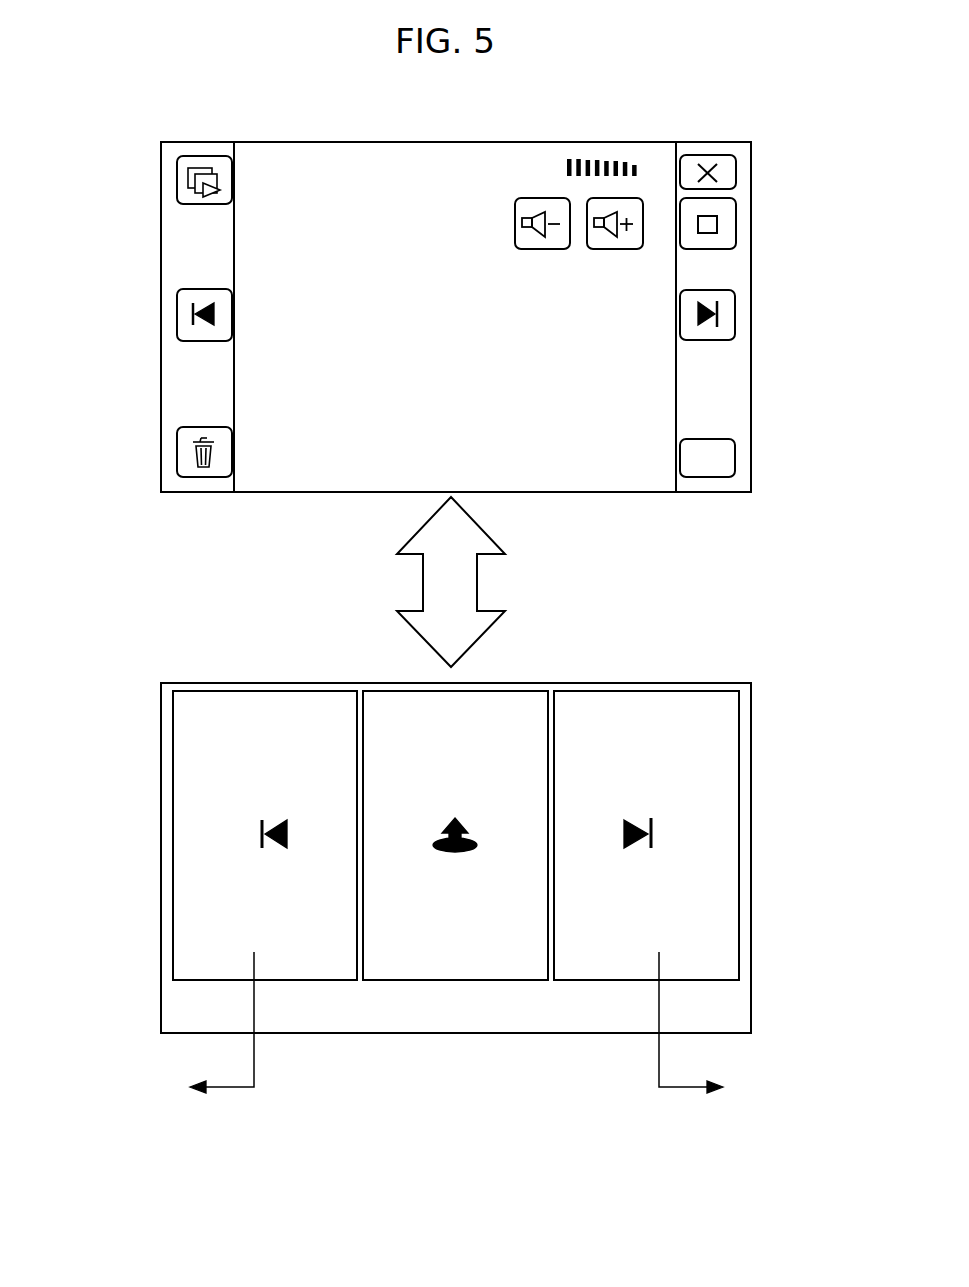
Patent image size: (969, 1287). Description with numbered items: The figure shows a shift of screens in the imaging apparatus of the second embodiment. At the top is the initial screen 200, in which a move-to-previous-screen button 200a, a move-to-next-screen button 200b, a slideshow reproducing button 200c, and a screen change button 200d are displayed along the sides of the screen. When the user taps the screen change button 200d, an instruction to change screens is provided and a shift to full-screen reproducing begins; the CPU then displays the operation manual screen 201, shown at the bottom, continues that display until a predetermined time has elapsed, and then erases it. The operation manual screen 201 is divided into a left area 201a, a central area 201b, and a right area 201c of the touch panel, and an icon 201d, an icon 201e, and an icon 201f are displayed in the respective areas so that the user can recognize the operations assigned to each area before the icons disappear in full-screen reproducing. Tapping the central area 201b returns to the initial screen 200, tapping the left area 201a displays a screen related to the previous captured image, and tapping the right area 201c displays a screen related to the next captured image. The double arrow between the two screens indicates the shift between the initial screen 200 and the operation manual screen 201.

The initial screen 200 is at (554, 142).
The move-to-previous-screen button 200a is at (177, 313).
The move-to-next-screen button 200b is at (735, 315).
The slideshow reproducing button 200c is at (177, 180).
The screen change button 200d is at (735, 458).
The operation manual screen 201 is at (603, 682).
The left area 201a is at (330, 965).
The central area 201b is at (503, 965).
The right area 201c is at (593, 965).
The icon 201d is at (276, 818).
The icon 201e is at (455, 818).
The icon 201f is at (628, 818).